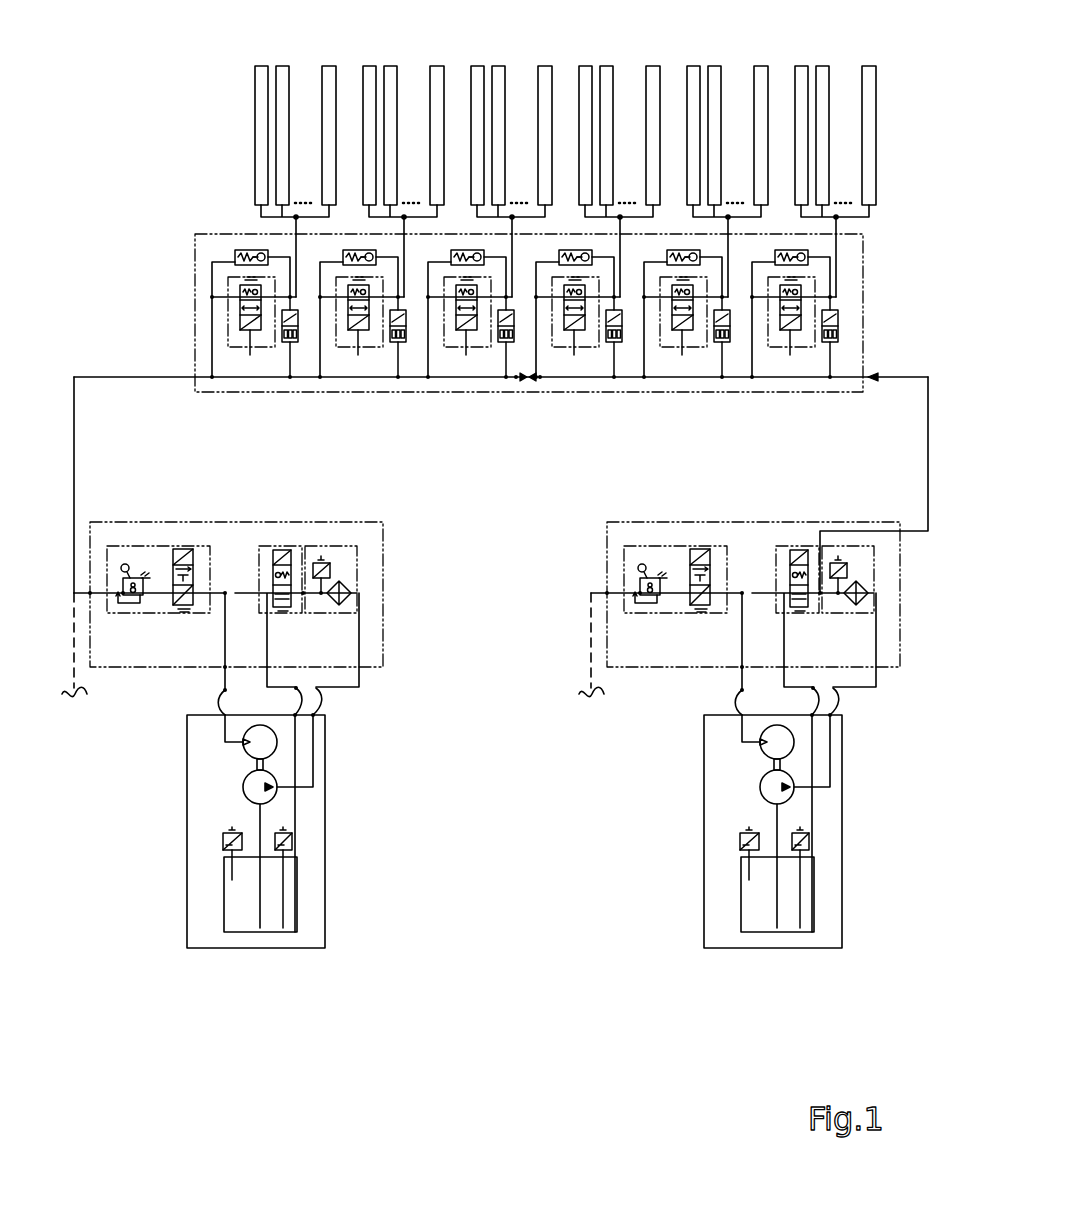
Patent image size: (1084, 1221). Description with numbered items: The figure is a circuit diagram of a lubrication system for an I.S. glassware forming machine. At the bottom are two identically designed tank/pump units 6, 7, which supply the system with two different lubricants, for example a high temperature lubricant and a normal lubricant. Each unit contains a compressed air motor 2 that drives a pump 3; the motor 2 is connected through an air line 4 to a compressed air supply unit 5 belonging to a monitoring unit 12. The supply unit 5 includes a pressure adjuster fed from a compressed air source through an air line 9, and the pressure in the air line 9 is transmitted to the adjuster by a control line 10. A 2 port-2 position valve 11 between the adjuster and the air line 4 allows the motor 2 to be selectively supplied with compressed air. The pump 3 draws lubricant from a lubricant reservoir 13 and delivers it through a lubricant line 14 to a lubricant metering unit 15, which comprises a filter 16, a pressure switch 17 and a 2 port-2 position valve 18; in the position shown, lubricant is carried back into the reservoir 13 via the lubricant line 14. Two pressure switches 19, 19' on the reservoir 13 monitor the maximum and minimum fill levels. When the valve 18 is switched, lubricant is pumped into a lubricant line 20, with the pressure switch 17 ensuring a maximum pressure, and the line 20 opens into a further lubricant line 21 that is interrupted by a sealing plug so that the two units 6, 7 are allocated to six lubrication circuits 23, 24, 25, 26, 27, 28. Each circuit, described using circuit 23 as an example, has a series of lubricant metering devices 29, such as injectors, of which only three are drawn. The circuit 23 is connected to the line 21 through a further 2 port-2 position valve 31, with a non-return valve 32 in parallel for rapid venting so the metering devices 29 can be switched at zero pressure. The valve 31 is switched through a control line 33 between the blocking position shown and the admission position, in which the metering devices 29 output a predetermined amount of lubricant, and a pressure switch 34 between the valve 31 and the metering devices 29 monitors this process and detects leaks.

The compressed air motor 2 is at (242, 752).
The pump 3 is at (245, 800).
The air line 4 is at (226, 700).
The compressed air supply unit 5 is at (145, 623).
The tank/pump unit 6 is at (207, 968).
The tank/pump unit 7 is at (724, 968).
The air line 9 is at (94, 602).
The control line 10 is at (134, 603).
The 2 port-2 position valve 11 is at (186, 548).
The monitoring unit 12 is at (385, 600).
The lubricant reservoir 13 is at (224, 915).
The lubricant line 14 is at (296, 688).
The lubricant metering unit 15 is at (318, 540).
The filter 16 is at (350, 590).
The pressure switch 17 is at (333, 570).
The 2 port-2 position valve 18 is at (272, 577).
The pressure switch 19 is at (443, 626).
The pressure switch 19' is at (595, 877).
The lubricant line 20 is at (222, 522).
The lubricant line 21 is at (390, 393).
The lubrication circuit 23 is at (309, 230).
The lubrication circuit 24 is at (417, 230).
The lubrication circuit 25 is at (525, 230).
The lubrication circuit 26 is at (633, 230).
The lubrication circuit 27 is at (741, 230).
The lubrication circuit 28 is at (856, 234).
The lubricant metering devices 29 is at (510, 181).
The 2 port-2 position valve 31 is at (240, 322).
The non-return valve 32 is at (235, 258).
The control line 33 is at (250, 355).
The pressure switch 34 is at (290, 355).